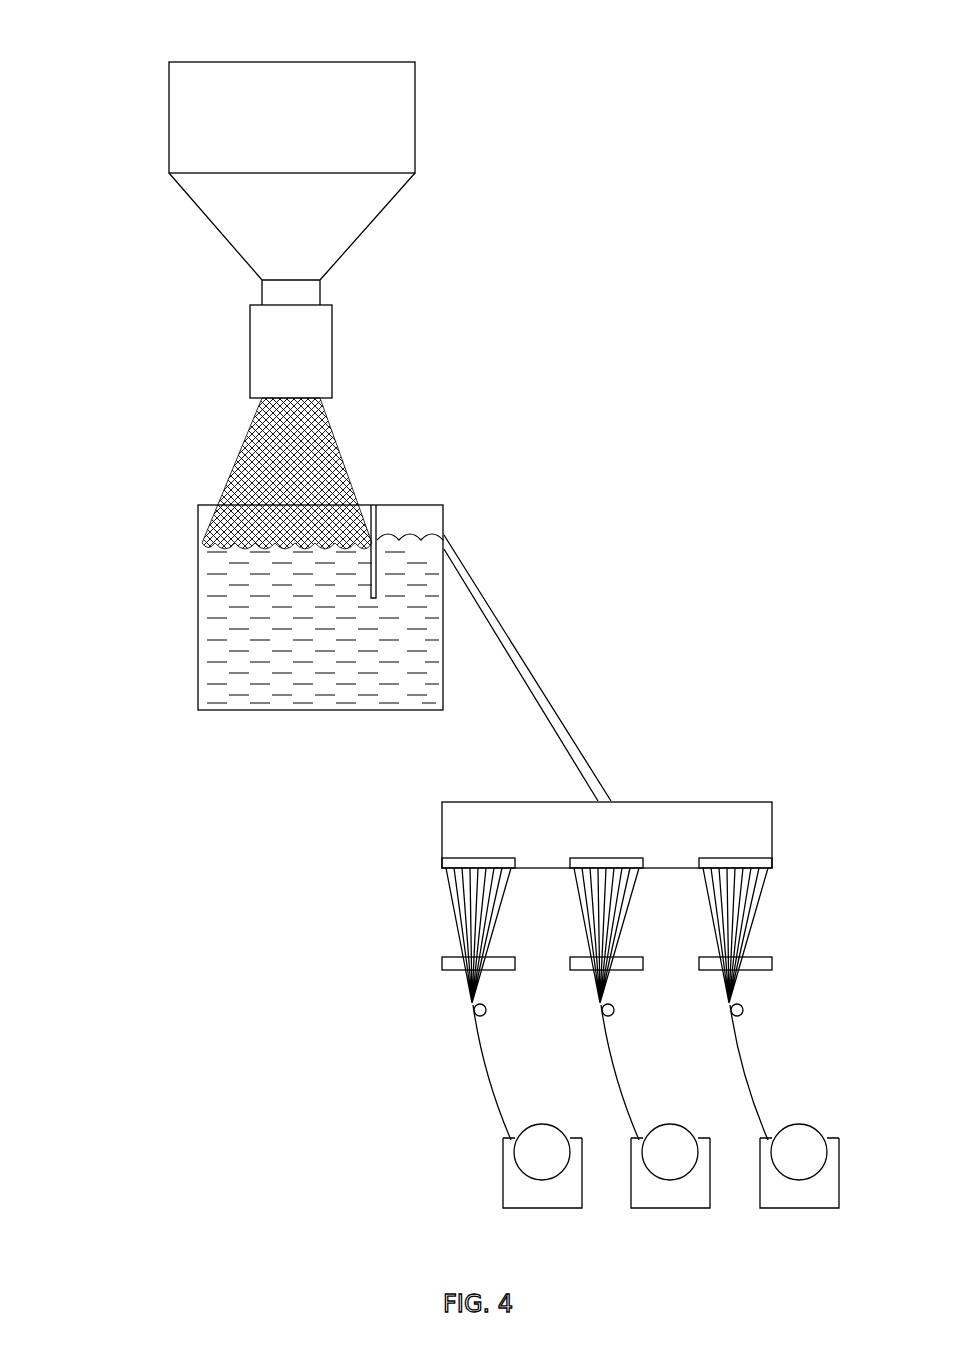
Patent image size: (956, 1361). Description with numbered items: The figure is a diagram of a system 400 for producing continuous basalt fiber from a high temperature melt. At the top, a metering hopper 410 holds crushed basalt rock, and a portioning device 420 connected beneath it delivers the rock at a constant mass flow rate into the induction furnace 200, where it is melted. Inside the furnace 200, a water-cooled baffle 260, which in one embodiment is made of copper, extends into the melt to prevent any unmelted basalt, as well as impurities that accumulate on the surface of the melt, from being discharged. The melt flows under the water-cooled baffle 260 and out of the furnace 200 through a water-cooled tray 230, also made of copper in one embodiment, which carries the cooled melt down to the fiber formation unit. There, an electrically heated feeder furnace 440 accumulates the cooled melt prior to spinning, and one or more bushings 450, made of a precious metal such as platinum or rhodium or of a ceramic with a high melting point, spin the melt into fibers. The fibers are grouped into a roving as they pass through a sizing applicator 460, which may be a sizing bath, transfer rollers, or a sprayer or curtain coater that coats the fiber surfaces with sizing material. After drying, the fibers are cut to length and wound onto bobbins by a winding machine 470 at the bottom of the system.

The fiber production system 400 is at (513, 32).
The metering hopper 410 is at (415, 125).
The portioning device 420 is at (332, 343).
The induction furnace 200 is at (198, 565).
The water-cooled baffle 260 is at (373, 502).
The water-cooled tray 230 is at (513, 640).
The electrically heated feeder furnace 440 is at (440, 825).
The bushing 450 is at (440, 860).
The sizing applicator 460 is at (440, 961).
The winding machine 470 is at (500, 1163).